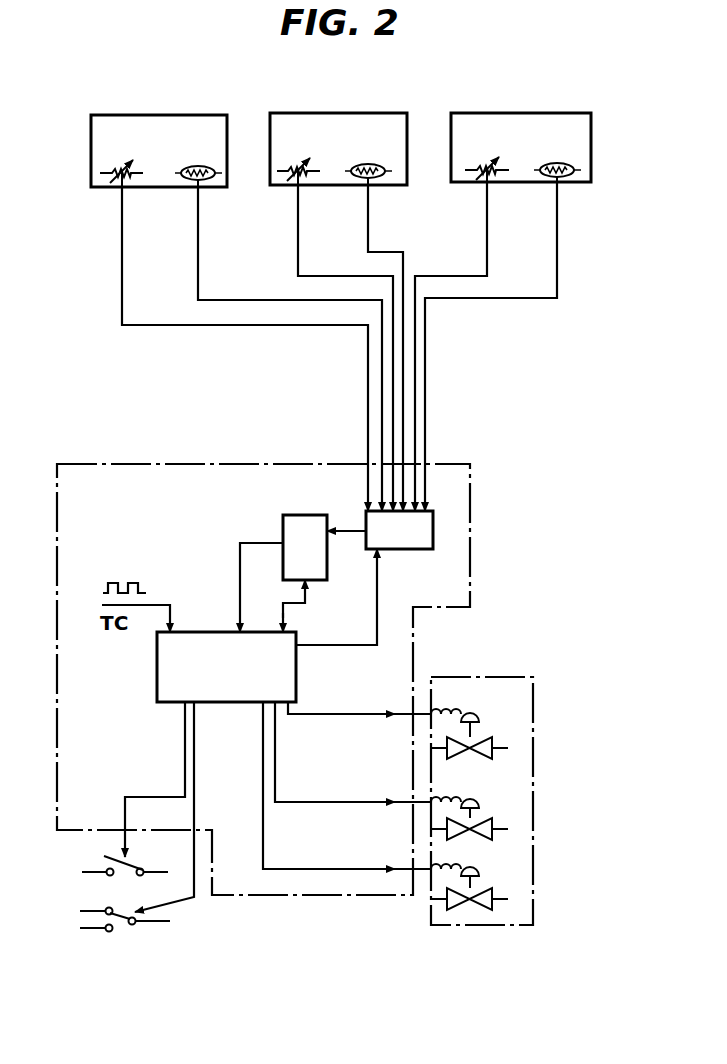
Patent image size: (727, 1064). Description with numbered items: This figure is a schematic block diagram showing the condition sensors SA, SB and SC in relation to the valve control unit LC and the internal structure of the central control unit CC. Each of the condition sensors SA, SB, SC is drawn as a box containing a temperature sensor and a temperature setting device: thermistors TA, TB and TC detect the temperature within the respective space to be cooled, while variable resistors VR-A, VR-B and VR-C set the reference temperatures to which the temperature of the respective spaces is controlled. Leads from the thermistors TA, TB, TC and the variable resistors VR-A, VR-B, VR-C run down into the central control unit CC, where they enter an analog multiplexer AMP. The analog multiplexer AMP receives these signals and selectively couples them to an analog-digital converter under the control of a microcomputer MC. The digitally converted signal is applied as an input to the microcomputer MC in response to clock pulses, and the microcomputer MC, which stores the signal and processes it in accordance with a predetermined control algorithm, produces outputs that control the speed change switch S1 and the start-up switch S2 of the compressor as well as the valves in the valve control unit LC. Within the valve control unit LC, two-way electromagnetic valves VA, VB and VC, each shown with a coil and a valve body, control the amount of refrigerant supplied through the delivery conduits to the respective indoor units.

The condition sensor SA is at (159, 138).
The condition sensor SB is at (338, 136).
The condition sensor SC is at (521, 133).
The variable resistor VR-A is at (130, 164).
The variable resistor VR-B is at (307, 162).
The variable resistor VR-C is at (491, 160).
The thermistor TA is at (198, 164).
The thermistor TB is at (368, 162).
The thermistor TC is at (557, 160).
The central control unit CC is at (263, 667).
The analog multiplexer AMP is at (399, 530).
The microcomputer MC is at (226, 667).
The working fluid controlling means LC is at (482, 788).
The two-way electromagnetic valve VA is at (469, 722).
The two-way electromagnetic valve VB is at (469, 805).
The two-way electromagnetic valve VC is at (472, 880).
The speed change switch S1 is at (111, 921).
The start-up switch S2 is at (110, 867).